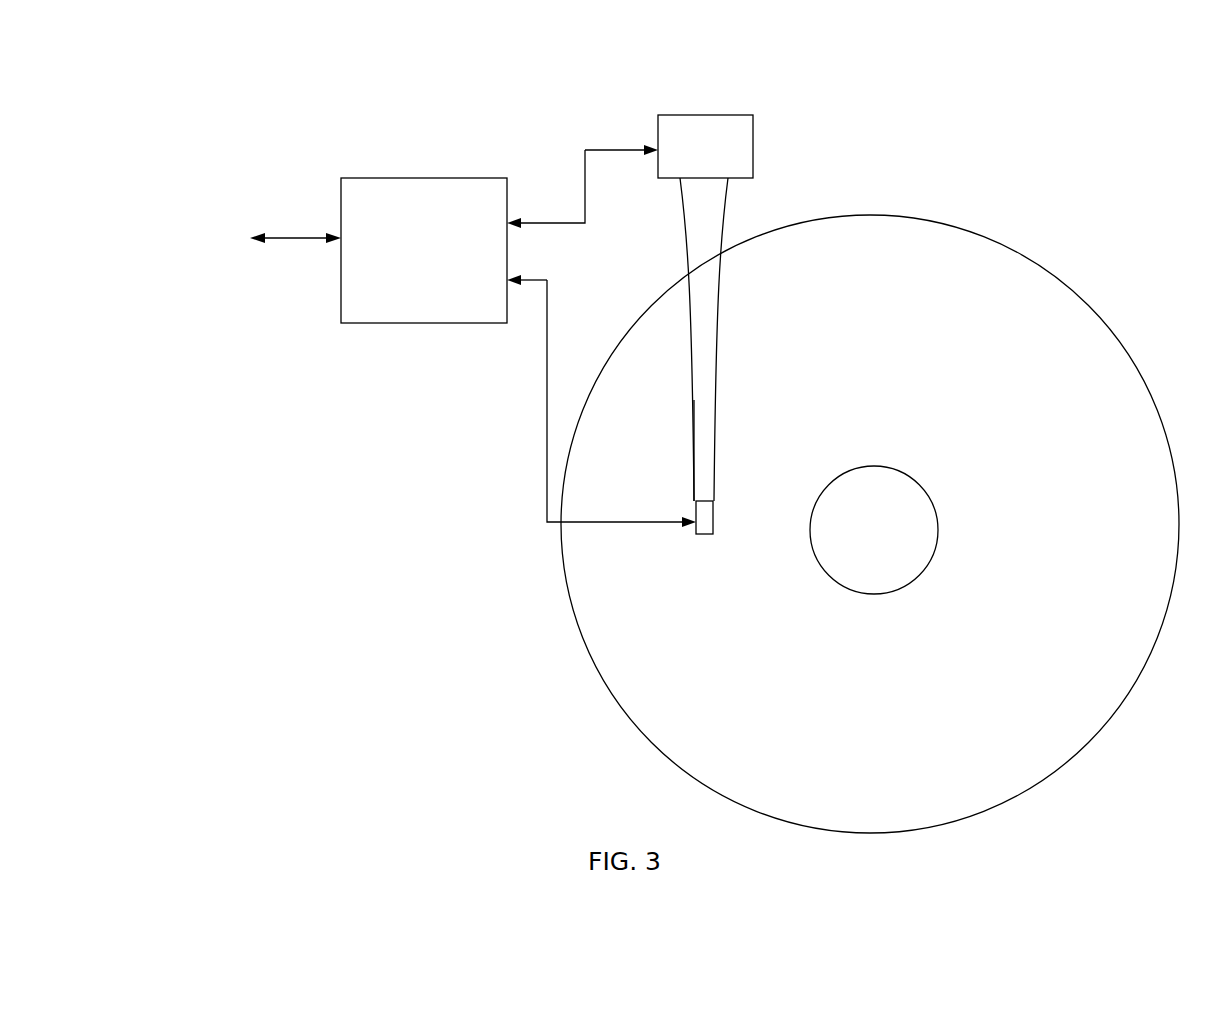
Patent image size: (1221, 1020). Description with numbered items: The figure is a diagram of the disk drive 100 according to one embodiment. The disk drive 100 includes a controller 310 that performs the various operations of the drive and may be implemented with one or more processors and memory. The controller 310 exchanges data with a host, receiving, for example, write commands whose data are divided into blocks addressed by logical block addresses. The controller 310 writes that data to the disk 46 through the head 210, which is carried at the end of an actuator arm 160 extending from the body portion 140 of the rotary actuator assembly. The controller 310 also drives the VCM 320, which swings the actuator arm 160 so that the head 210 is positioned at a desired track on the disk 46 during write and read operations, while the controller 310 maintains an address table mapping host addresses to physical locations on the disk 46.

The disk drive 100 is at (1144, 87).
The disk 46 is at (1128, 295).
The body portion 140 is at (686, 232).
The actuator arm 160 is at (693, 410).
The head 210 is at (686, 542).
The controller 310 is at (397, 178).
The VCM 320 is at (712, 115).